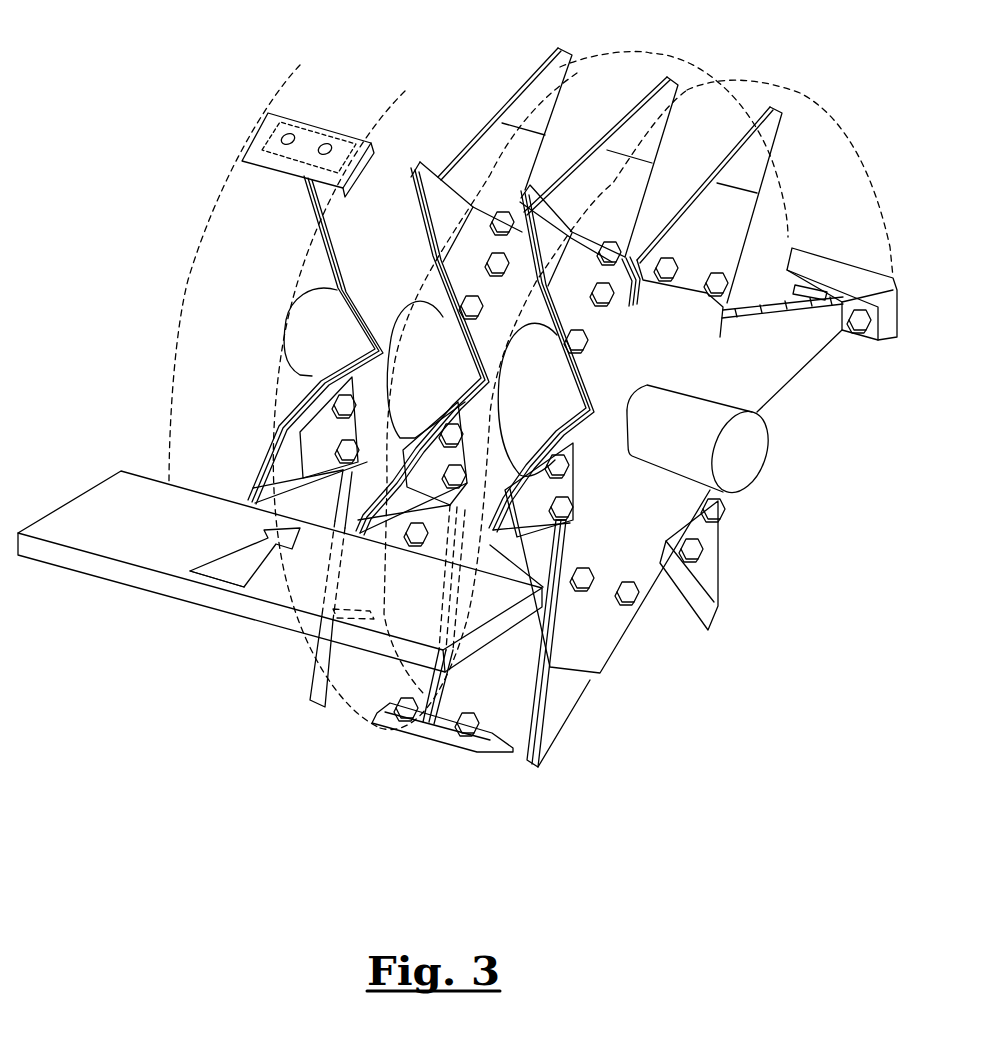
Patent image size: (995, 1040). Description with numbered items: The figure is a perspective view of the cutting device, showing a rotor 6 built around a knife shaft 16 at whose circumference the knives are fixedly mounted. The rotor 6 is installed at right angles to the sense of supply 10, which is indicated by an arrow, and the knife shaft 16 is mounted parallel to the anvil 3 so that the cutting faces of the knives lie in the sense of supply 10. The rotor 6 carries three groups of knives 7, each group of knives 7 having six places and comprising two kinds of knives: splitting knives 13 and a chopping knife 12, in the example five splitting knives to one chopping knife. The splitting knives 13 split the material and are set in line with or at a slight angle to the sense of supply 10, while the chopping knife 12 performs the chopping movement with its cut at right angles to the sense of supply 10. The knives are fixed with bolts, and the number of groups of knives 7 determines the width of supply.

The anvil 3 is at (102, 515).
The rotor 6 is at (278, 319).
The group of knives 7 is at (308, 725).
The sense of supply 10 is at (231, 593).
The chopping knife 12 is at (254, 155).
The splitting knife 13 is at (712, 586).
The knife shaft 16 is at (738, 465).